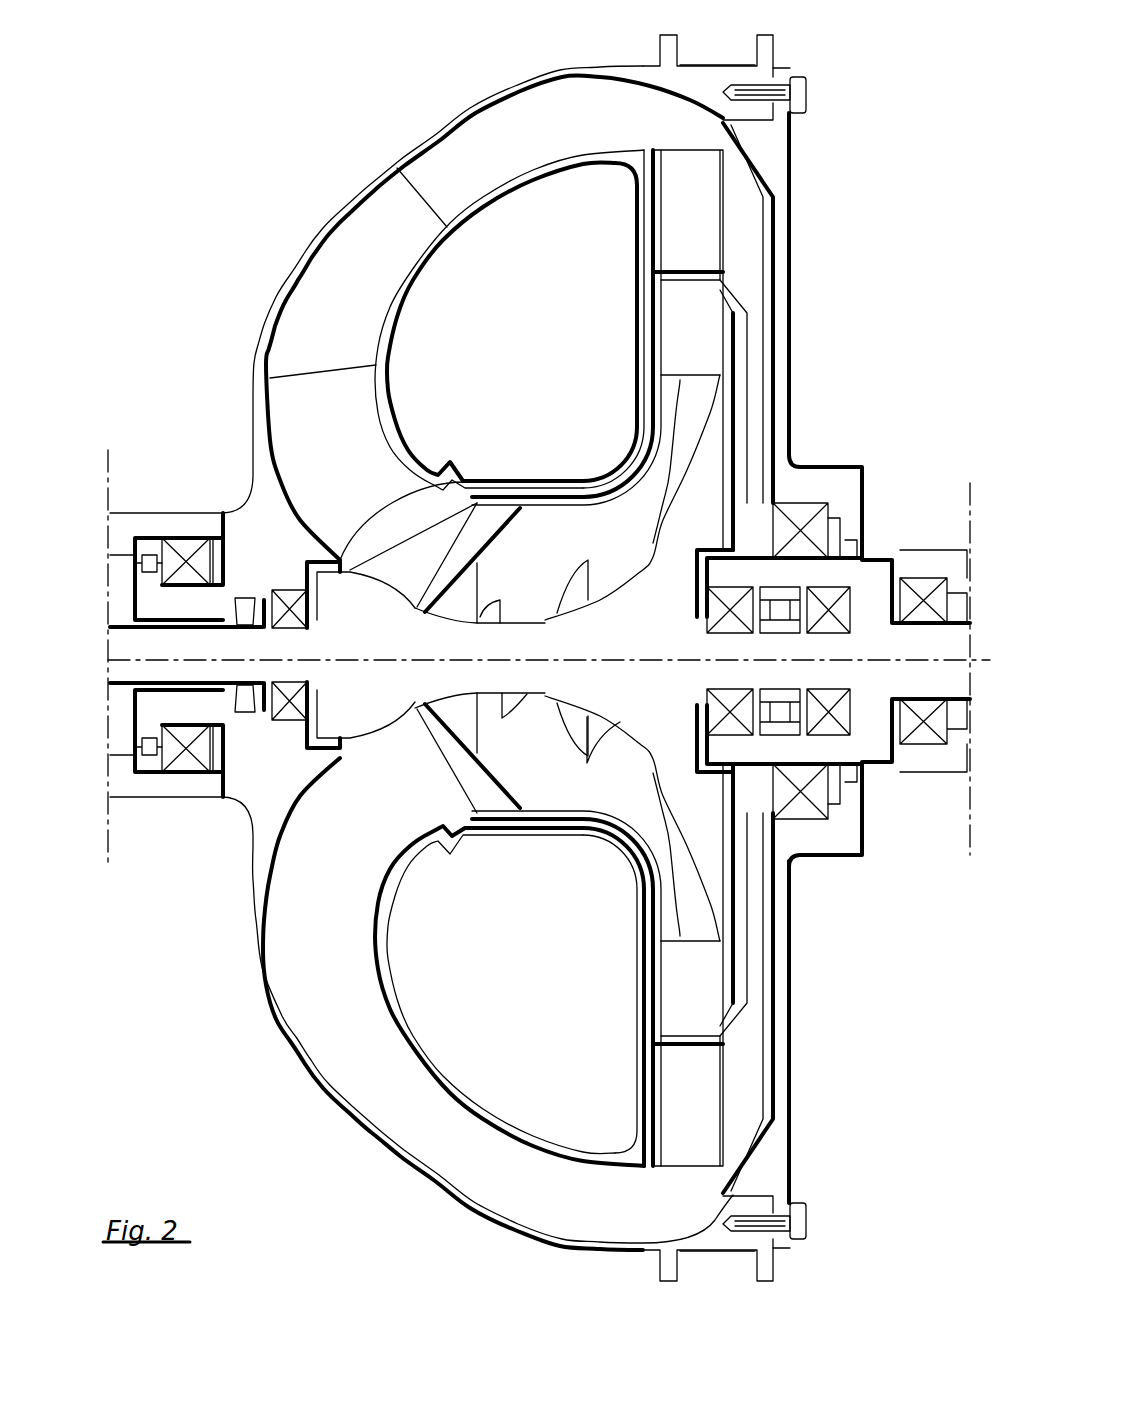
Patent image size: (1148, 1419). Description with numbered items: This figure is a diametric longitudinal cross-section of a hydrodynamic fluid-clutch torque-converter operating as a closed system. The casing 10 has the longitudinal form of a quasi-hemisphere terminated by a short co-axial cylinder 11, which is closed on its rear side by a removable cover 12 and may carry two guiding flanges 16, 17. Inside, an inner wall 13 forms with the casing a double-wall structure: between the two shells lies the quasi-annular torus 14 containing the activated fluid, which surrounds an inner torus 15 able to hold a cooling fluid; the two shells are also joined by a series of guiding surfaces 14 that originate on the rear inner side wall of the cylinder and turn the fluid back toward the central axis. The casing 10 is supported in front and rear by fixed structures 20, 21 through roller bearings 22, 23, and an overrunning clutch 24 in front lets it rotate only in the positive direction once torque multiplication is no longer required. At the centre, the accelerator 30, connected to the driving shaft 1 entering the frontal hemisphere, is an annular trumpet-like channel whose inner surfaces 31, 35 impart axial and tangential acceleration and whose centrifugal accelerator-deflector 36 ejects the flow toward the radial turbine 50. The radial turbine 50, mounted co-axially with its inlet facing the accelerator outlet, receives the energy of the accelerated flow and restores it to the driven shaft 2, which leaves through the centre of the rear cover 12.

The Driving Shaft 1 is at (228, 663).
The Driven Shaft 2 is at (945, 670).
The Casing 10 is at (347, 197).
The short co-axial Cylinder 11 is at (715, 63).
The removable cover 12 is at (782, 224).
The inner wall 13 is at (450, 240).
The Quasi-Annular-Torus 14 is at (432, 203).
The inner Torus 15 is at (548, 342).
The guiding flange 16 is at (657, 50).
The guiding flange 17 is at (776, 62).
The fixed structure 20 is at (128, 545).
The fixed structure 21 is at (920, 575).
The roller bearing 22 is at (182, 760).
The roller bearing 23 is at (918, 740).
The overrunning clutch 24 is at (150, 555).
The Accelerator 30 is at (370, 640).
The inner surface 31 is at (466, 658).
The inner surface 35 is at (687, 483).
The Centrifugal Accelerator-Deflector 36 is at (706, 338).
The Radial Turbine 50 is at (706, 228).